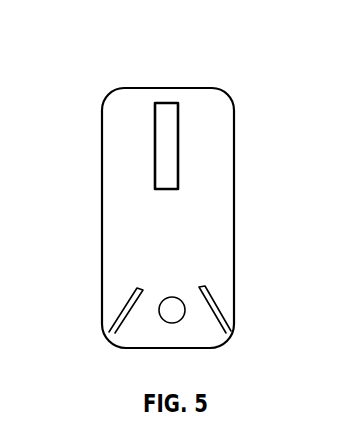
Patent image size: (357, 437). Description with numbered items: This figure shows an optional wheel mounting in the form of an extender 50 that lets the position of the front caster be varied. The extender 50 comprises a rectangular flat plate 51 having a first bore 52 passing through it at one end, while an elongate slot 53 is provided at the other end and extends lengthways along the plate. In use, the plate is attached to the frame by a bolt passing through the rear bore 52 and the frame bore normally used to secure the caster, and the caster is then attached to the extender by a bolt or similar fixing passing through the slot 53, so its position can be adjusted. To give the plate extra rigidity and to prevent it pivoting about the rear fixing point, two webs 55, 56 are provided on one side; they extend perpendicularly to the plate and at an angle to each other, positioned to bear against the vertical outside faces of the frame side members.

The extender 50 is at (238, 84).
The rectangular flat plate 51 is at (213, 216).
The first bore 52 is at (178, 312).
The elongate slot 53 is at (168, 157).
The web 55 is at (222, 308).
The web 56 is at (117, 312).